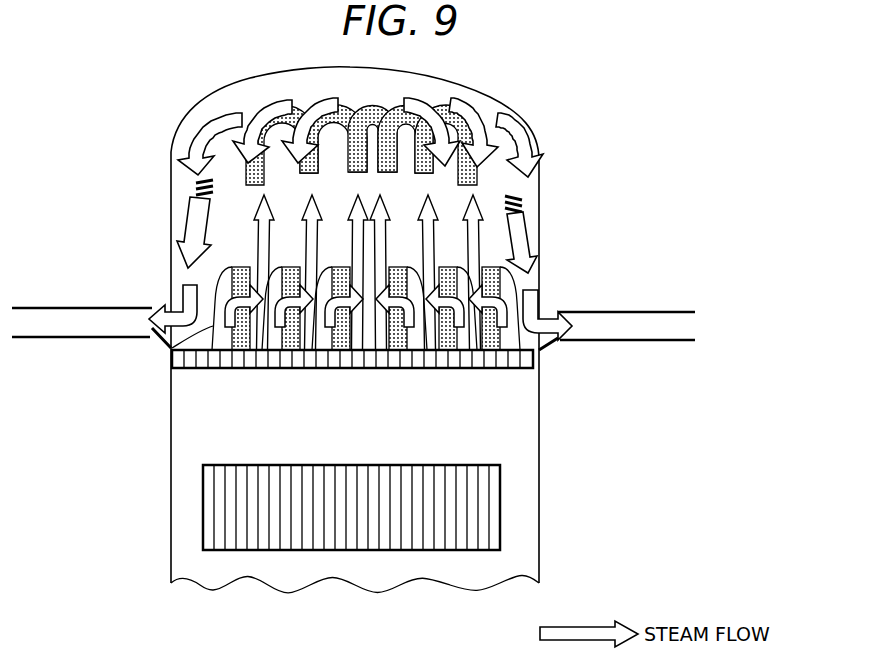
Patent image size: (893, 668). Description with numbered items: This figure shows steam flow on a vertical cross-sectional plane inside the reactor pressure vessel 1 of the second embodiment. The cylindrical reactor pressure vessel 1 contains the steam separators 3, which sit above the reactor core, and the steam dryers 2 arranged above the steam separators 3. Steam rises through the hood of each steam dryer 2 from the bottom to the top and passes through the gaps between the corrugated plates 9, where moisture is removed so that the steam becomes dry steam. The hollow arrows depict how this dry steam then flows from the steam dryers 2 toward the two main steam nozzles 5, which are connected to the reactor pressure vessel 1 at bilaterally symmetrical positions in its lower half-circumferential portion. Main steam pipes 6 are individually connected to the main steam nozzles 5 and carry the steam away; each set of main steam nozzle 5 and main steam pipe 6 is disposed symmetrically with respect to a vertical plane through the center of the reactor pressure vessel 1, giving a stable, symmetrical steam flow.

The reactor pressure vessel 1 is at (496, 97).
The steam dryer 2 is at (171, 349).
The steam separator 3 is at (217, 530).
The main steam nozzle 5 is at (160, 300).
The main steam pipe 6 is at (58, 340).
The corrugated plate 9 is at (238, 369).